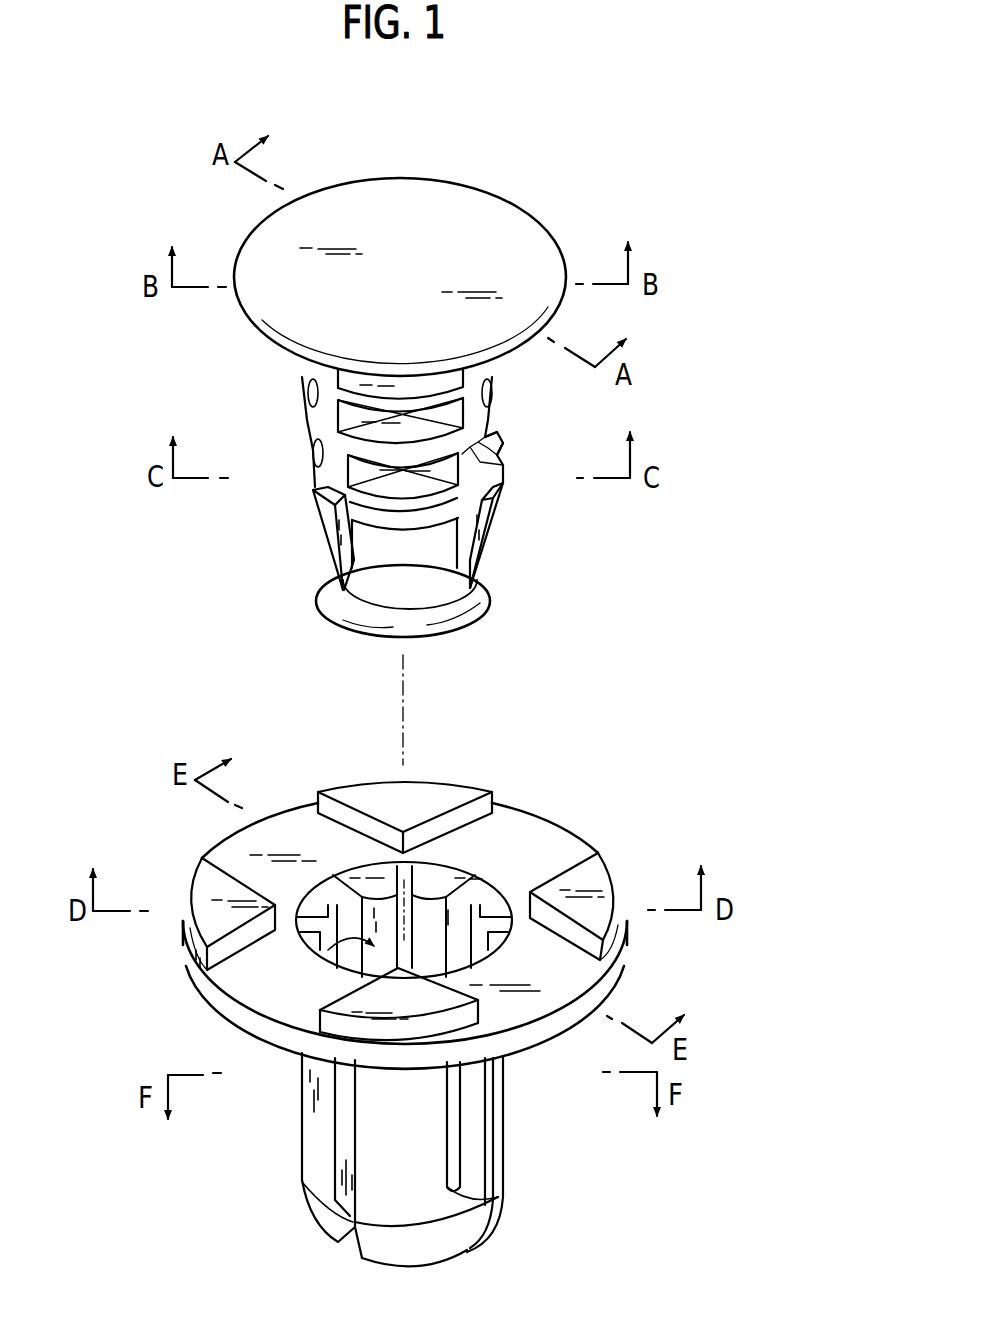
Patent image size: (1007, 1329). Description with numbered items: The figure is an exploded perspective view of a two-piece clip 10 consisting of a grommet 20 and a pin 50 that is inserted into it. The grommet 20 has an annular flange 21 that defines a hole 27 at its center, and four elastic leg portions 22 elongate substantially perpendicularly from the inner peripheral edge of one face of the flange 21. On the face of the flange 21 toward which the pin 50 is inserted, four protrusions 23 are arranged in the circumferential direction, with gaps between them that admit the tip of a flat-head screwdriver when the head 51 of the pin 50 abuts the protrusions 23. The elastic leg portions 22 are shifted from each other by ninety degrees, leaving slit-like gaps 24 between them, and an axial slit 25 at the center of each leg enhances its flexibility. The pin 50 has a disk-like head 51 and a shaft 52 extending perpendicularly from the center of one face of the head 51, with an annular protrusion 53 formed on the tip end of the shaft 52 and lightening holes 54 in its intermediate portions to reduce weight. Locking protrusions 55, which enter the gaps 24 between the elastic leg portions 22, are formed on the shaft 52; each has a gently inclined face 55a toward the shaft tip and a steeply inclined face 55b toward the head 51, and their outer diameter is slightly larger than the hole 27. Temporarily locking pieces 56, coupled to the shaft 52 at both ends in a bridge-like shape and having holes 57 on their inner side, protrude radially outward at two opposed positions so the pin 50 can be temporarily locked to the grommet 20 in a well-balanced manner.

The two-piece clip 10 is at (150, 203).
The pin 50 is at (502, 166).
The head 51 is at (395, 190).
The shaft 52 is at (326, 455).
The annular protrusion 53 is at (485, 605).
The lightening holes 54 is at (411, 482).
The locking protrusions 55 is at (315, 502).
The gently inclined face 55a is at (322, 540).
The steeply inclined face 55b is at (313, 490).
The temporarily locking pieces 56 is at (500, 455).
The holes 57 is at (493, 433).
The grommet 20 is at (614, 792).
The annular flange 21 is at (245, 985).
The elastic leg portions 22 is at (316, 1160).
The protrusions 23 is at (445, 790).
The slit-like gaps 24 is at (340, 884).
The axial slit 25 is at (500, 1197).
The hole 27 is at (316, 972).